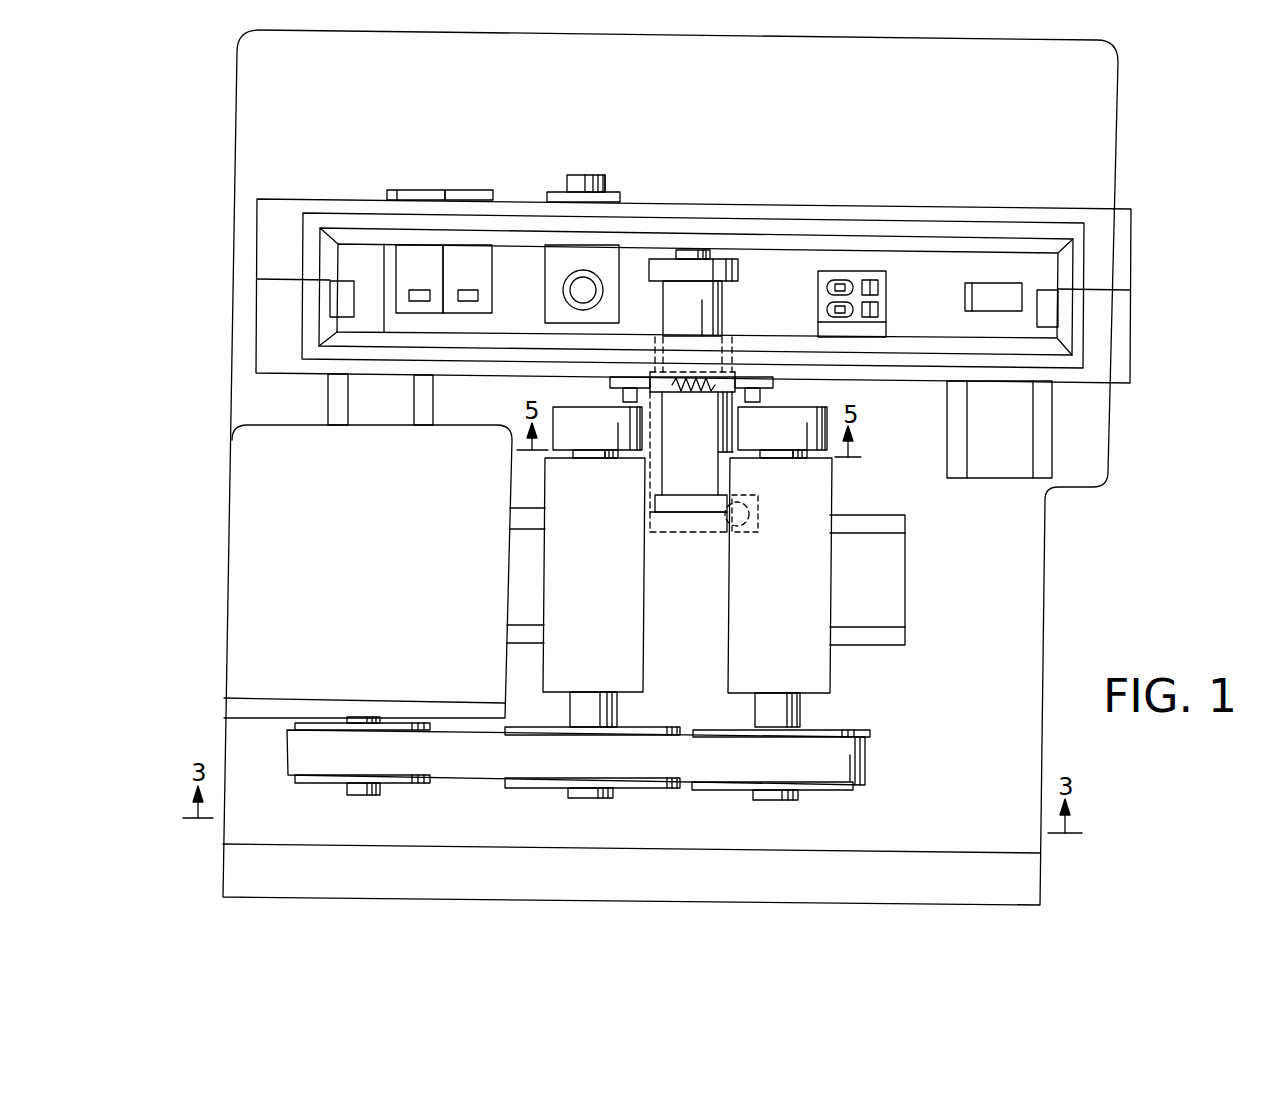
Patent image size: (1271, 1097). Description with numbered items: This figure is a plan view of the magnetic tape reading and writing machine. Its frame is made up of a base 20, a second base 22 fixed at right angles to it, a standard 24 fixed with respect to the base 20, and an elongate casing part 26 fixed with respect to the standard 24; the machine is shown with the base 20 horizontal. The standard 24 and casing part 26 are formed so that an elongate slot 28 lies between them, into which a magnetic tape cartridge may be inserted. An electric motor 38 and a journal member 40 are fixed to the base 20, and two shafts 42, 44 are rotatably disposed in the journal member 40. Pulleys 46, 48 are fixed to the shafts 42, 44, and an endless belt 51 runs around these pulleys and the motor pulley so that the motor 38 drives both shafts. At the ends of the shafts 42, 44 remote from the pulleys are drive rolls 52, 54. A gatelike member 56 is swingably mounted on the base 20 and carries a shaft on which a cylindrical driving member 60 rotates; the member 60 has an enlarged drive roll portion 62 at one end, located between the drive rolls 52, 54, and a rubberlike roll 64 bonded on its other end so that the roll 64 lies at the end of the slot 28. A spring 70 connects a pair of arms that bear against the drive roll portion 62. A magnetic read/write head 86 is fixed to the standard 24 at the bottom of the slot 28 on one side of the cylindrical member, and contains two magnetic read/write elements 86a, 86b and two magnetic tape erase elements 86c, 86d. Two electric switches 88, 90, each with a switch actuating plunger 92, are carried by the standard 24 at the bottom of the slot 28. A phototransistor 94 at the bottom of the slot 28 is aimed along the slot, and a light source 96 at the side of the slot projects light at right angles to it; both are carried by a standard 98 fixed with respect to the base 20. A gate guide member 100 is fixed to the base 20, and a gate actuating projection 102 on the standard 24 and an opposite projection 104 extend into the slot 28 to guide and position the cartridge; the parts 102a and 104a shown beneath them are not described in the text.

The base 20 is at (1118, 117).
The base 22 is at (223, 866).
The standard 24 is at (1130, 330).
The elongate casing part 26 is at (1130, 262).
The elongate slot 28 is at (937, 268).
The electric motor 38 is at (275, 425).
The journal member 40 is at (831, 668).
The shaft 42 is at (617, 710).
The shaft 44 is at (800, 712).
The pulley 46 is at (541, 798).
The pulley 48 is at (728, 800).
The endless belt 51 is at (468, 780).
The drive roll 52 is at (568, 443).
The drive roll 54 is at (756, 443).
The gatelike member 56 is at (718, 478).
The cylindrical driving member 60 is at (663, 315).
The drive roll portion 62 is at (647, 456).
The roll 64 is at (738, 270).
The spring 70 is at (695, 392).
The magnetic read/write head 86 is at (854, 256).
The magnetic read/write element 86a is at (827, 288).
The magnetic read/write element 86b is at (827, 313).
The magnetic tape erase element 86c is at (878, 290).
The magnetic tape erase element 86d is at (878, 314).
The electric switch 88 is at (420, 190).
The electric switch 90 is at (465, 190).
The switch actuating plunger 92 is at (420, 290).
The phototransistor 94 is at (545, 290).
The light source 96 is at (575, 175).
The standard 98 is at (612, 192).
The gate guide member 100 is at (1000, 283).
The gate actuating projection 102 is at (1037, 321).
The support leg 102a is at (1046, 327).
The projection 104 is at (357, 292).
The support leg 104a is at (340, 317).